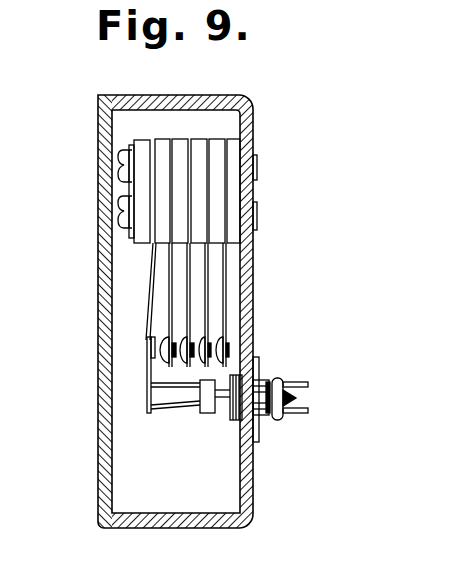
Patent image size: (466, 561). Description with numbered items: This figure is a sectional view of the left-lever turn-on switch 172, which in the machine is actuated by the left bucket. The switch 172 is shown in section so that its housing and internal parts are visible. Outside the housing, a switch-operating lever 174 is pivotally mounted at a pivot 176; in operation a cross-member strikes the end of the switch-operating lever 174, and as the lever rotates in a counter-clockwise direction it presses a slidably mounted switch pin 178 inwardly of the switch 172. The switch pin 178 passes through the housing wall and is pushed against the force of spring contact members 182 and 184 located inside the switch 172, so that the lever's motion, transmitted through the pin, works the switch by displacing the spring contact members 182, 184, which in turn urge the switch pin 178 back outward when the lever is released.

The left-lever turn-on switch 172 is at (88, 197).
The switch-operating lever 174 is at (289, 406).
The pivot mounting 176 is at (279, 380).
The switch pin 178 is at (226, 399).
The spring contact member 182 is at (143, 392).
The spring contact member 184 is at (197, 408).